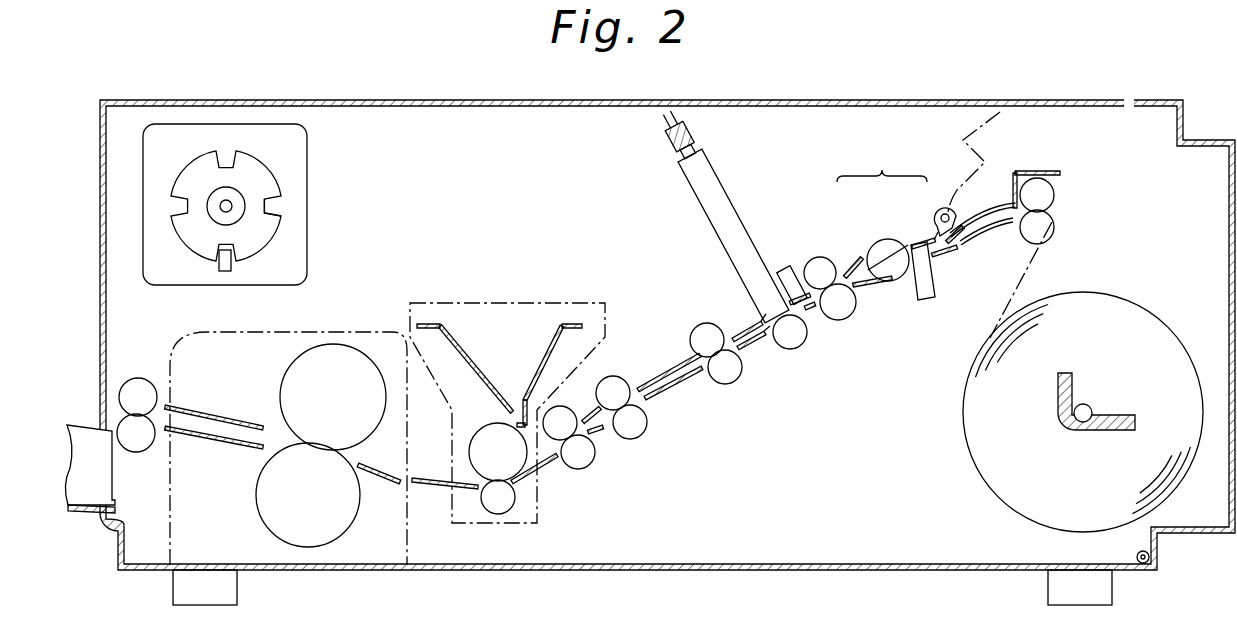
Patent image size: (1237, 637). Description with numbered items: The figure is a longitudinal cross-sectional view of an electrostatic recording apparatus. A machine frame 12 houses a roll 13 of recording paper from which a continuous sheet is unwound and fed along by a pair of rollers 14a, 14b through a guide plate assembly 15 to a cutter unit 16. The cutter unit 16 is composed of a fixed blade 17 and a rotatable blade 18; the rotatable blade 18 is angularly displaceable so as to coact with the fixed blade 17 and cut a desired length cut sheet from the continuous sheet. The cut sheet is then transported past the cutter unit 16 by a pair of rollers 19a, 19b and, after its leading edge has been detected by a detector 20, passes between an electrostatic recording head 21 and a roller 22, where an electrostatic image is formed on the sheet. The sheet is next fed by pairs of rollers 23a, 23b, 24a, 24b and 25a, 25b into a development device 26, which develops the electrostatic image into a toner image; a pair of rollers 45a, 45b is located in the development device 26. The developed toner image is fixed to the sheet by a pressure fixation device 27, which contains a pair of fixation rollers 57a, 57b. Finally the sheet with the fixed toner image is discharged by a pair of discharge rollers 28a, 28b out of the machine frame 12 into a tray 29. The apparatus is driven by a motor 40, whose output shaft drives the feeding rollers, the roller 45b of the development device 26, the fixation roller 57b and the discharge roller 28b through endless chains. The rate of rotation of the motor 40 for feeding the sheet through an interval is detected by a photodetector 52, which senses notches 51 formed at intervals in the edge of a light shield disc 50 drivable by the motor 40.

The machine frame 12 is at (872, 569).
The roll of recording paper 13 is at (1120, 323).
The roller 14a is at (1043, 200).
The roller 14b is at (1043, 228).
The guide plate assembly 15 is at (985, 202).
The cutter unit 16 is at (887, 219).
The fixed blade 17 is at (922, 260).
The rotatable blade 18 is at (883, 248).
The roller 19a is at (822, 270).
The roller 19b is at (838, 310).
The detector 20 is at (788, 272).
The electrostatic recording head 21 is at (702, 188).
The roller 22 is at (792, 335).
The roller 23a is at (702, 333).
The roller 23b is at (725, 375).
The roller 24a is at (615, 383).
The roller 24b is at (638, 422).
The roller 25a is at (573, 427).
The roller 25b is at (583, 457).
The development device 26 is at (497, 315).
The pressure fixation device 27 is at (311, 340).
The discharge roller 28a is at (135, 388).
The discharge roller 28b is at (135, 443).
The tray 29 is at (82, 440).
The motor 40 is at (290, 150).
The roller 45a is at (517, 453).
The roller 45b is at (508, 498).
The light shield disc 50 is at (265, 187).
The notches 51 is at (273, 213).
The photodetector 52 is at (230, 260).
The fixation roller 57a is at (293, 387).
The fixation roller 57b is at (275, 505).